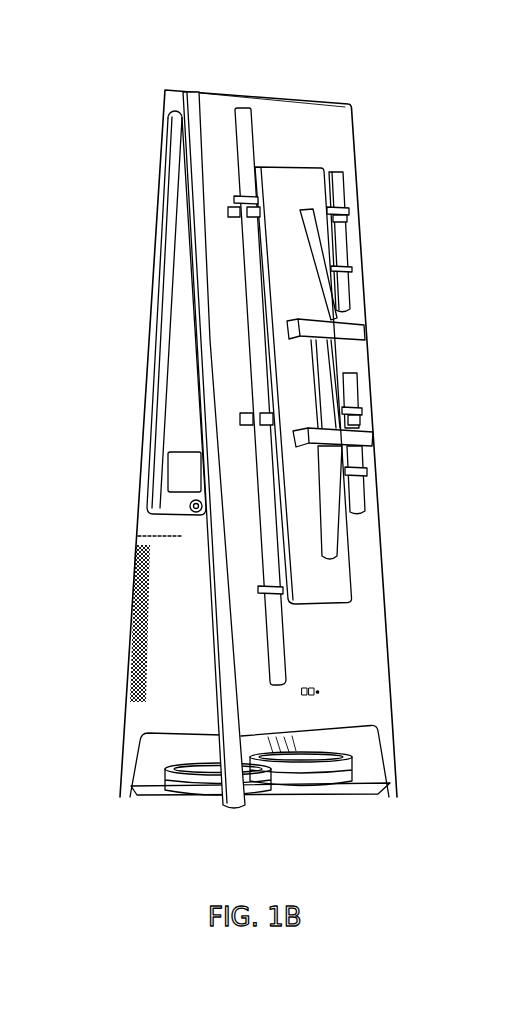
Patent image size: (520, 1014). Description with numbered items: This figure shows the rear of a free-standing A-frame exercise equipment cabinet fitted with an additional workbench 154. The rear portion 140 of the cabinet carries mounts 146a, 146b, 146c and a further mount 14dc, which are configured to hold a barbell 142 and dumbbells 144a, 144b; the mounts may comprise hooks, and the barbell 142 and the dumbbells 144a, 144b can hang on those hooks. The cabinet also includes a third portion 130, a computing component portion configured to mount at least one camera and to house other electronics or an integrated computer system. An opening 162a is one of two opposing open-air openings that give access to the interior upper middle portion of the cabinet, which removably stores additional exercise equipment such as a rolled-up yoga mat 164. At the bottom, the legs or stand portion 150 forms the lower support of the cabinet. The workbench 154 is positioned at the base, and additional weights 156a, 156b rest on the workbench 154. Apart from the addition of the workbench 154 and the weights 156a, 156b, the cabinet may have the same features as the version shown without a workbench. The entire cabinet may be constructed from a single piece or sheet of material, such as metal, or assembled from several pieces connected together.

The fifth portion 150 is at (422, 40).
The fourth portion 140 is at (216, 161).
The barbell 142 is at (252, 135).
The mount 146a is at (350, 220).
The mount 146b is at (365, 420).
The mount 146c is at (225, 212).
The clamp 14dc is at (238, 420).
The dumbbell 144a is at (350, 257).
The dumbbell 144b is at (363, 493).
The opening 162a is at (186, 428).
The third portion 130 is at (168, 472).
The rolled-up yoga mat 164 is at (189, 507).
The workbench 154 is at (150, 793).
The additional weight 156a is at (185, 786).
The additional weight 156b is at (333, 780).